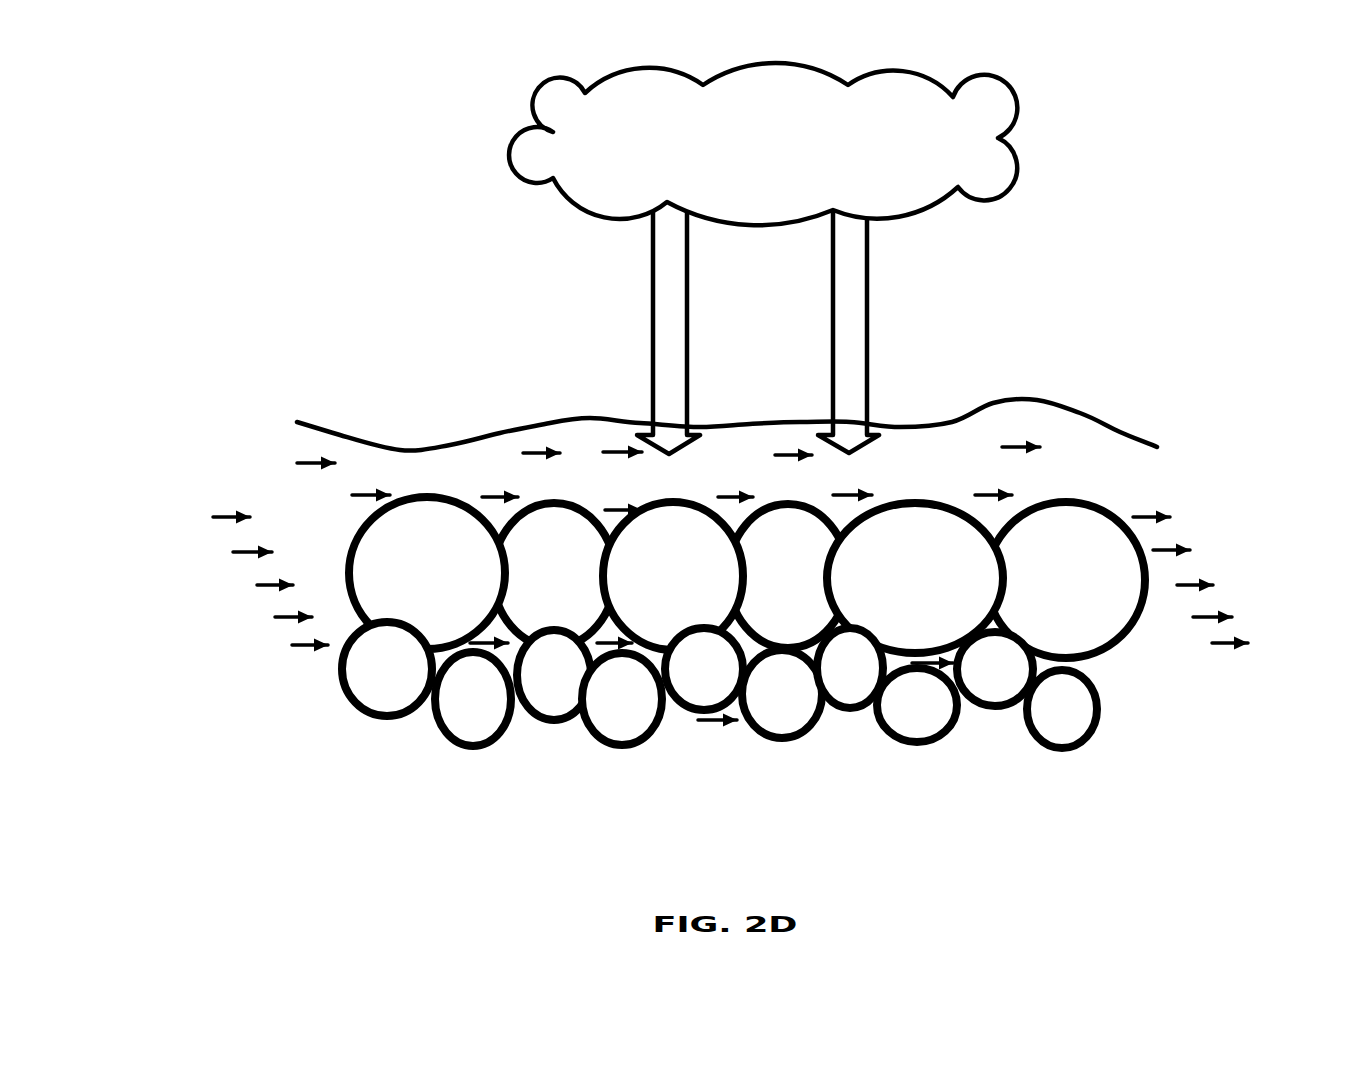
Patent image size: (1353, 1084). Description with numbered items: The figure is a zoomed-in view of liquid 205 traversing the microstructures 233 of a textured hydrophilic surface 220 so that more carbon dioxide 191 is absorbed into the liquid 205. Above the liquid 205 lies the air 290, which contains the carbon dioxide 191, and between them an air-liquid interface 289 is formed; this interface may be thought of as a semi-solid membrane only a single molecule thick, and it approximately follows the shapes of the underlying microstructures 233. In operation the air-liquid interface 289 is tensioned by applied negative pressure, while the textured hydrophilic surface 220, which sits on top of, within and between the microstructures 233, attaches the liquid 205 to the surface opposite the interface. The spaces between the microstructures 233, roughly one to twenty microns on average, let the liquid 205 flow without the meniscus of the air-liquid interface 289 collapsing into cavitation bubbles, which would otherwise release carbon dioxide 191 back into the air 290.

The carbon dioxide 191 is at (755, 166).
The air-liquid interface 289 is at (759, 359).
The air 290 is at (380, 409).
The textured hydrophilic surface 220 is at (772, 540).
The microstructures 233 is at (411, 594).
The liquid 205 is at (310, 468).